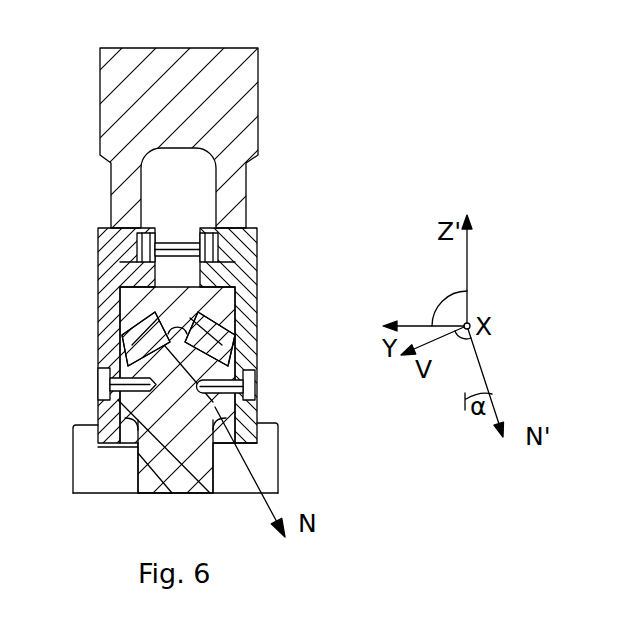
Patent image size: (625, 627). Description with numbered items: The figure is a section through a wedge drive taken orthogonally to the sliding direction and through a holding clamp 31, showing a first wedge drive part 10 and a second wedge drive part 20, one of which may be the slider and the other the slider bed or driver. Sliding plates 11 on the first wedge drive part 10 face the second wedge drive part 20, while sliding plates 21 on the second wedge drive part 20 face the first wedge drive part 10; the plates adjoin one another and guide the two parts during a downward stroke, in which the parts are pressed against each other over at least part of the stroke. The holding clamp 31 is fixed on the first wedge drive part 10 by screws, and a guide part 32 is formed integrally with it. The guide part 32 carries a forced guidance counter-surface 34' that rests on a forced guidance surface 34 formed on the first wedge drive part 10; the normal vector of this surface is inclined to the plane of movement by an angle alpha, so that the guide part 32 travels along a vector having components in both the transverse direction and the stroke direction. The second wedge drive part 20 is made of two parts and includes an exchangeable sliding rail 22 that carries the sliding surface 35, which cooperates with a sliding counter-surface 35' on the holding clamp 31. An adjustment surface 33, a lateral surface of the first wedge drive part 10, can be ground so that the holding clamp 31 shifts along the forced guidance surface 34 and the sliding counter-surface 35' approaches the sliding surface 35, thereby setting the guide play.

The first wedge drive part 10 is at (208, 487).
The sliding plates 11 is at (120, 362).
The second wedge drive part 20 is at (257, 121).
The sliding plates 21 is at (122, 344).
The sliding rail 22 is at (120, 282).
The holding clamp 31 is at (258, 249).
The guide part 32 is at (268, 435).
The adjustment surface 33 is at (100, 406).
The forced guidance surface 34 is at (76, 457).
The forced guidance counter-surface 34' is at (260, 389).
The sliding surface 35 is at (116, 235).
The sliding counter-surface 35' is at (262, 278).